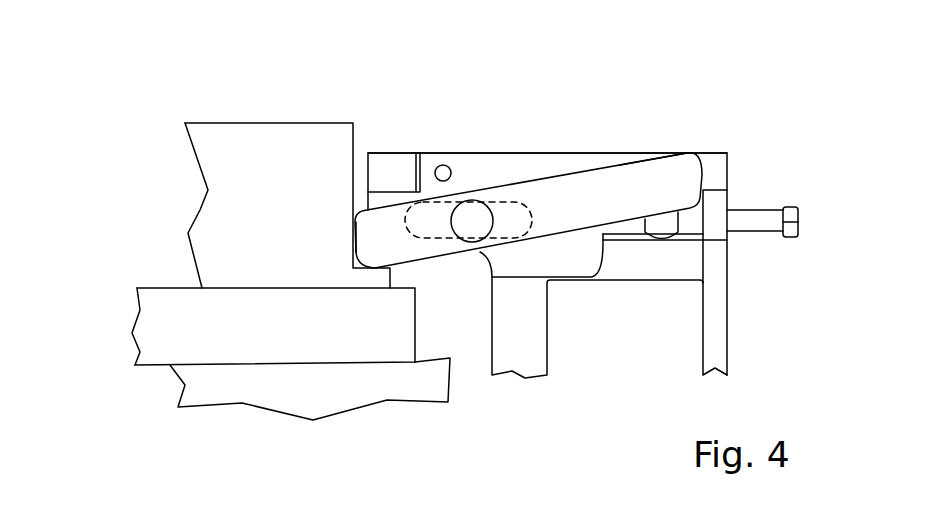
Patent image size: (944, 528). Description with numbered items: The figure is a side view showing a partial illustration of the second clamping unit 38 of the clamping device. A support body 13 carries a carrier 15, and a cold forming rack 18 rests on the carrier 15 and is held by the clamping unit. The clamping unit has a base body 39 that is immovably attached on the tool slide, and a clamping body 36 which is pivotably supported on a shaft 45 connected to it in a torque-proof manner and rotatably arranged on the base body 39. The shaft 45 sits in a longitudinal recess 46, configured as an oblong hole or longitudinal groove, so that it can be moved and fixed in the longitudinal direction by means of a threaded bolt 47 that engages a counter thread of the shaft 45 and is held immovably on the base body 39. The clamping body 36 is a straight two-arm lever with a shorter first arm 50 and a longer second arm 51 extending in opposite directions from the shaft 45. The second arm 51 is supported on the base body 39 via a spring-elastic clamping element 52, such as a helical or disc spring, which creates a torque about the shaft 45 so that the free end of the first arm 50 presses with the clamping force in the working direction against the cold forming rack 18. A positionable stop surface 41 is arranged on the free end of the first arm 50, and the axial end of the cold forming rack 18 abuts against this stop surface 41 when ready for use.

The support body 13 is at (190, 383).
The carrier 15 is at (157, 324).
The cold forming rack 18 is at (215, 213).
The clamping body 36 is at (546, 185).
The second clamping unit 38 is at (710, 110).
The base body 39 is at (533, 346).
The positionable stop surface 41 is at (345, 224).
The shaft 45 is at (472, 214).
The longitudinal recess 46 is at (515, 203).
The threaded bolt 47 is at (760, 210).
The first arm 50 is at (382, 218).
The second arm 51 is at (640, 162).
The clamping element 52 is at (668, 237).